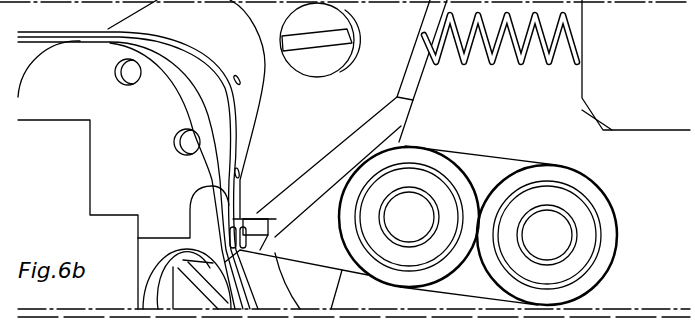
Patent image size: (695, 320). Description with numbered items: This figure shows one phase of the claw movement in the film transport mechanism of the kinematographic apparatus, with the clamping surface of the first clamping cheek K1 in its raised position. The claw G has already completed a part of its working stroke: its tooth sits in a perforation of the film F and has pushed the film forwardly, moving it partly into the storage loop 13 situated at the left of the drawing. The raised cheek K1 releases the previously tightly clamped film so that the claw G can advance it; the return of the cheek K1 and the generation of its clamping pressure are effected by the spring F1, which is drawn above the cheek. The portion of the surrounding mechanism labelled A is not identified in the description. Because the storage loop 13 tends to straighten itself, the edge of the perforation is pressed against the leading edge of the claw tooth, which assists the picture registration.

The storage loop 13 is at (207, 40).
The film F is at (232, 58).
The housing body A is at (105, 146).
The first clamping cheek K1 is at (291, 156).
The claw G is at (329, 247).
The spring F1 is at (489, 62).